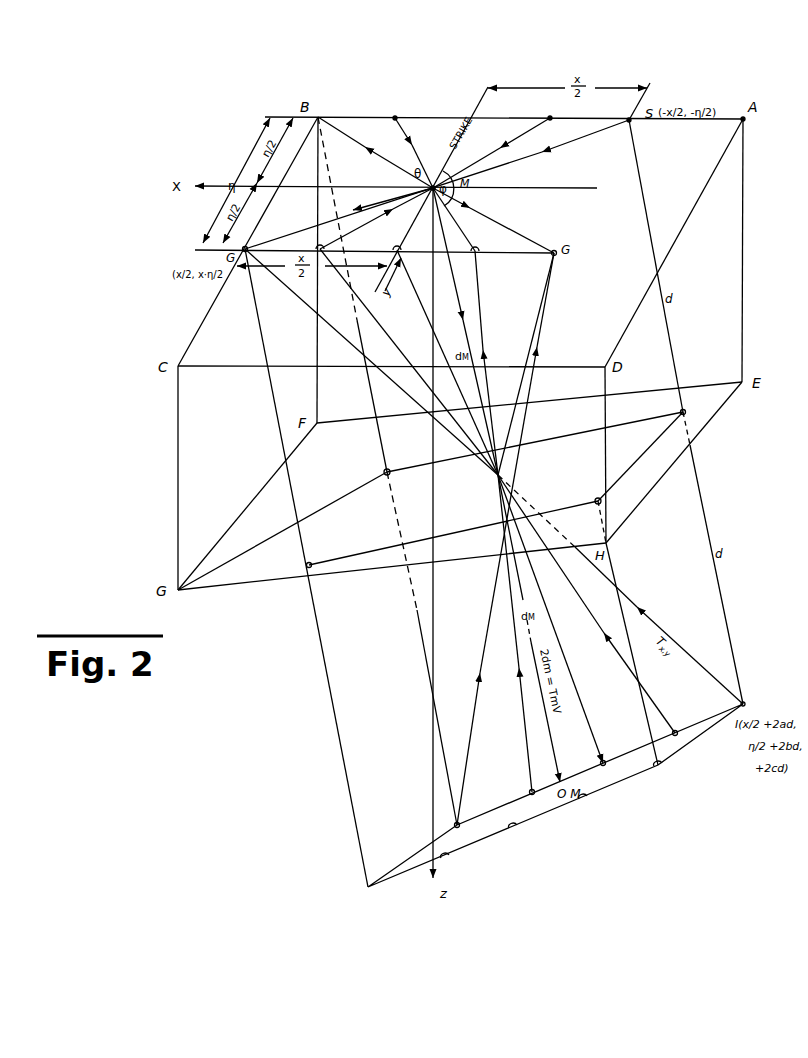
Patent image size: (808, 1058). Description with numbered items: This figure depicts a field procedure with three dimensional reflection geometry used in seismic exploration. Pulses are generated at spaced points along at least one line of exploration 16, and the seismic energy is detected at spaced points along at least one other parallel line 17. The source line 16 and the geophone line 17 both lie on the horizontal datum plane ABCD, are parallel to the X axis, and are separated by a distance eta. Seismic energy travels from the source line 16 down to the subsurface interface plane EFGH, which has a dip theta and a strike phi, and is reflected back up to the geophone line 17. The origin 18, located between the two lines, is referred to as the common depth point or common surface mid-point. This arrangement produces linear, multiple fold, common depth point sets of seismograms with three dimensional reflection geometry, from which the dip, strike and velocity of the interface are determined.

The line of exploration 16 is at (371, 117).
The parallel line 17 is at (518, 255).
The origin 18 is at (434, 186).